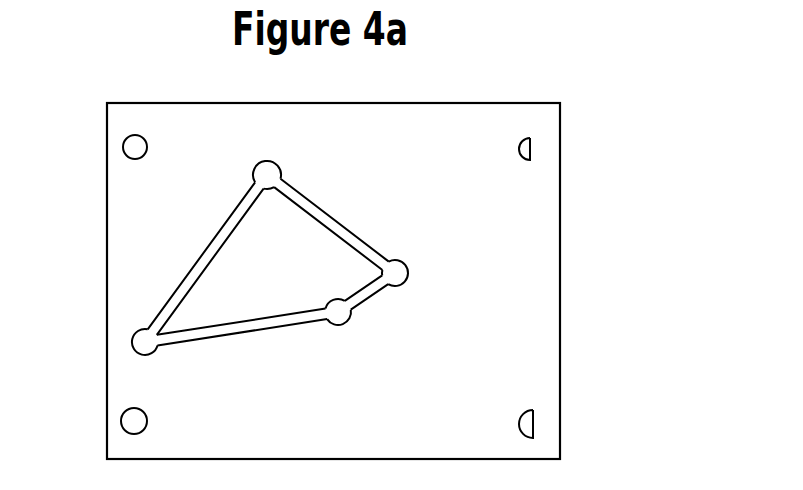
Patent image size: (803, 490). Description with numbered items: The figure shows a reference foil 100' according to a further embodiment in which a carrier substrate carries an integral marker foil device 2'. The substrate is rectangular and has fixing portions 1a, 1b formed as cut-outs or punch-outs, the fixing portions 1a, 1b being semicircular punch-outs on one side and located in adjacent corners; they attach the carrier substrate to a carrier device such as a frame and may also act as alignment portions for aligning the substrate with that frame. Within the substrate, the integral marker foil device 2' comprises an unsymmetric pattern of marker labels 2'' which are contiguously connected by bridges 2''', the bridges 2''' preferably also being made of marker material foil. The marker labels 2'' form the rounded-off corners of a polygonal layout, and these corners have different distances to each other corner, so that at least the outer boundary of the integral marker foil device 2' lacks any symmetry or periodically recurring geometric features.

The reference foil 100' is at (414, 281).
The fixing portion 1a is at (134, 146).
The fixing portion 1b is at (528, 148).
The integral marker foil device 2' is at (283, 245).
The marker labels 2'' is at (411, 272).
The bridges 2''' is at (229, 360).